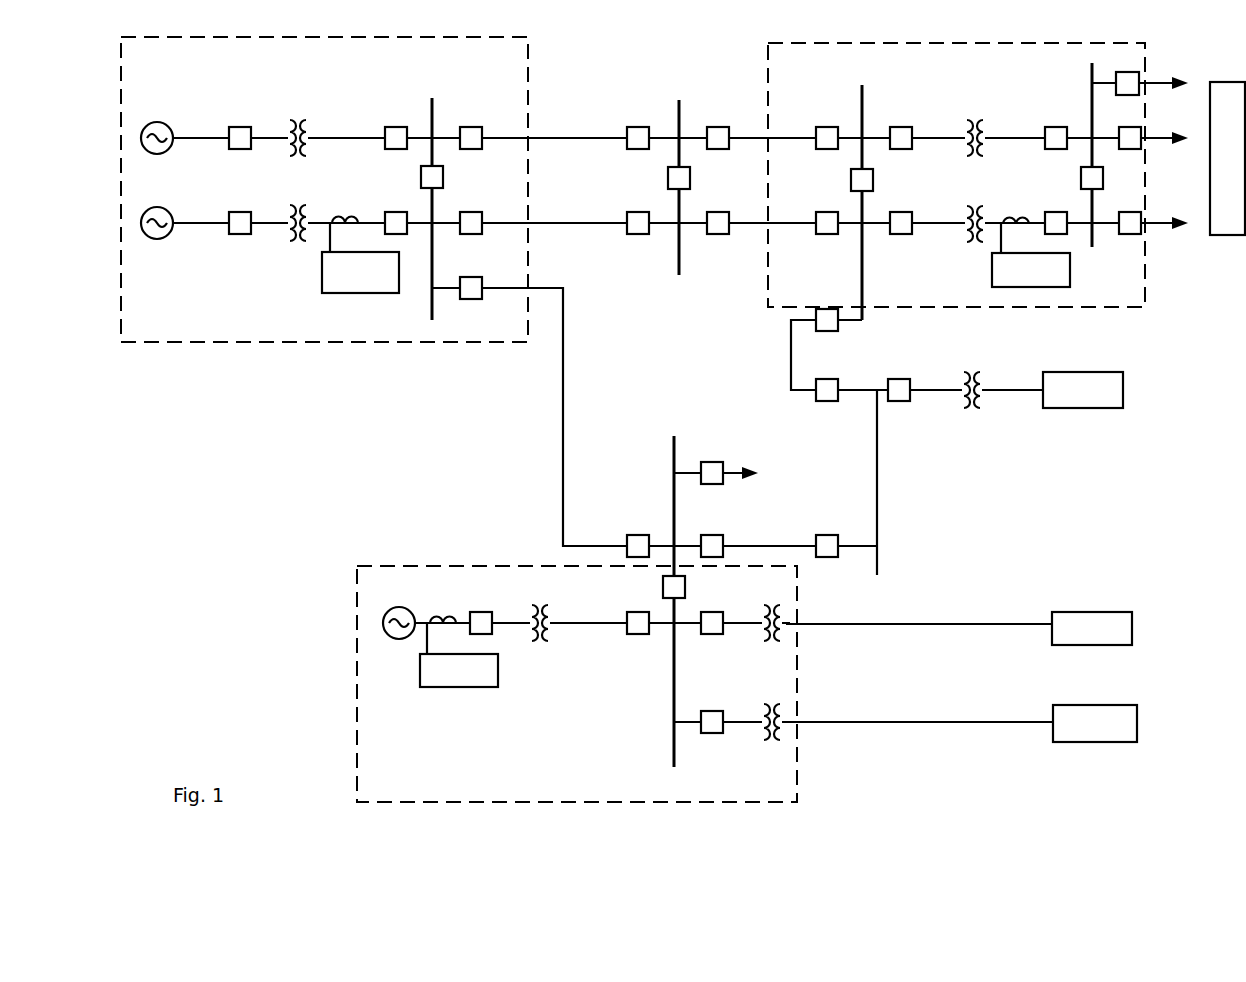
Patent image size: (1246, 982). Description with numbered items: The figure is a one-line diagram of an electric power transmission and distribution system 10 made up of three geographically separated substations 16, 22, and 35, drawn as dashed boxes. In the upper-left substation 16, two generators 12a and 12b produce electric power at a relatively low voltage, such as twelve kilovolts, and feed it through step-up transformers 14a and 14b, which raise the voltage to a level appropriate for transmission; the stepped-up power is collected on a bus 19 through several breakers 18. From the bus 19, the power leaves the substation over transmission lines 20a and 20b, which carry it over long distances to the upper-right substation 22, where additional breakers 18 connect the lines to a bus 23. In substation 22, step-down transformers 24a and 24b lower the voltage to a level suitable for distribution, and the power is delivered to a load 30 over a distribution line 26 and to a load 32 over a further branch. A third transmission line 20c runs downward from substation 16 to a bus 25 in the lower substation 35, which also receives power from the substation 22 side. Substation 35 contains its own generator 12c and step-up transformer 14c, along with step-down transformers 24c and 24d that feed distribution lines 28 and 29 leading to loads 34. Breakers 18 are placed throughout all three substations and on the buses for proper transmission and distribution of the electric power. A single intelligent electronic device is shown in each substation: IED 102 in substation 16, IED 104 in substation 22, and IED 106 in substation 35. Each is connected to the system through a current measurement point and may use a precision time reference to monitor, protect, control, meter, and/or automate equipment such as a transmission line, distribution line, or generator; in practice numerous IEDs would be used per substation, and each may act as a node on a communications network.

The electric power distribution system 10 is at (719, 54).
The generator 12a is at (165, 152).
The generator 12b is at (165, 237).
The generator 12c is at (405, 639).
The step-up transformer 14a is at (292, 118).
The step-up transformer 14b is at (294, 203).
The step-up transformer 14c is at (533, 605).
The substation 16 is at (528, 78).
The breaker 18 is at (470, 150).
The bus 19 is at (430, 100).
The transmission line 20a is at (592, 136).
The transmission line 20b is at (584, 222).
The transmission line 20c is at (594, 545).
The substation 22 is at (1020, 43).
The bus 23 is at (862, 104).
The step-down transformer 24a is at (979, 121).
The step-down transformer 24b is at (979, 206).
The step-down transformer 24c is at (773, 606).
The step-down transformer 24d is at (771, 742).
The bus 25 is at (674, 455).
The distribution line 26 is at (1146, 88).
The distribution line 28 is at (933, 626).
The distribution line 29 is at (942, 724).
The load 30 is at (1208, 235).
The load 32 is at (1125, 388).
The load 34 is at (1112, 645).
The substation 35 is at (443, 565).
The intelligent electronic device 102 is at (322, 280).
The intelligent electronic device 104 is at (1070, 257).
The intelligent electronic device 106 is at (498, 664).